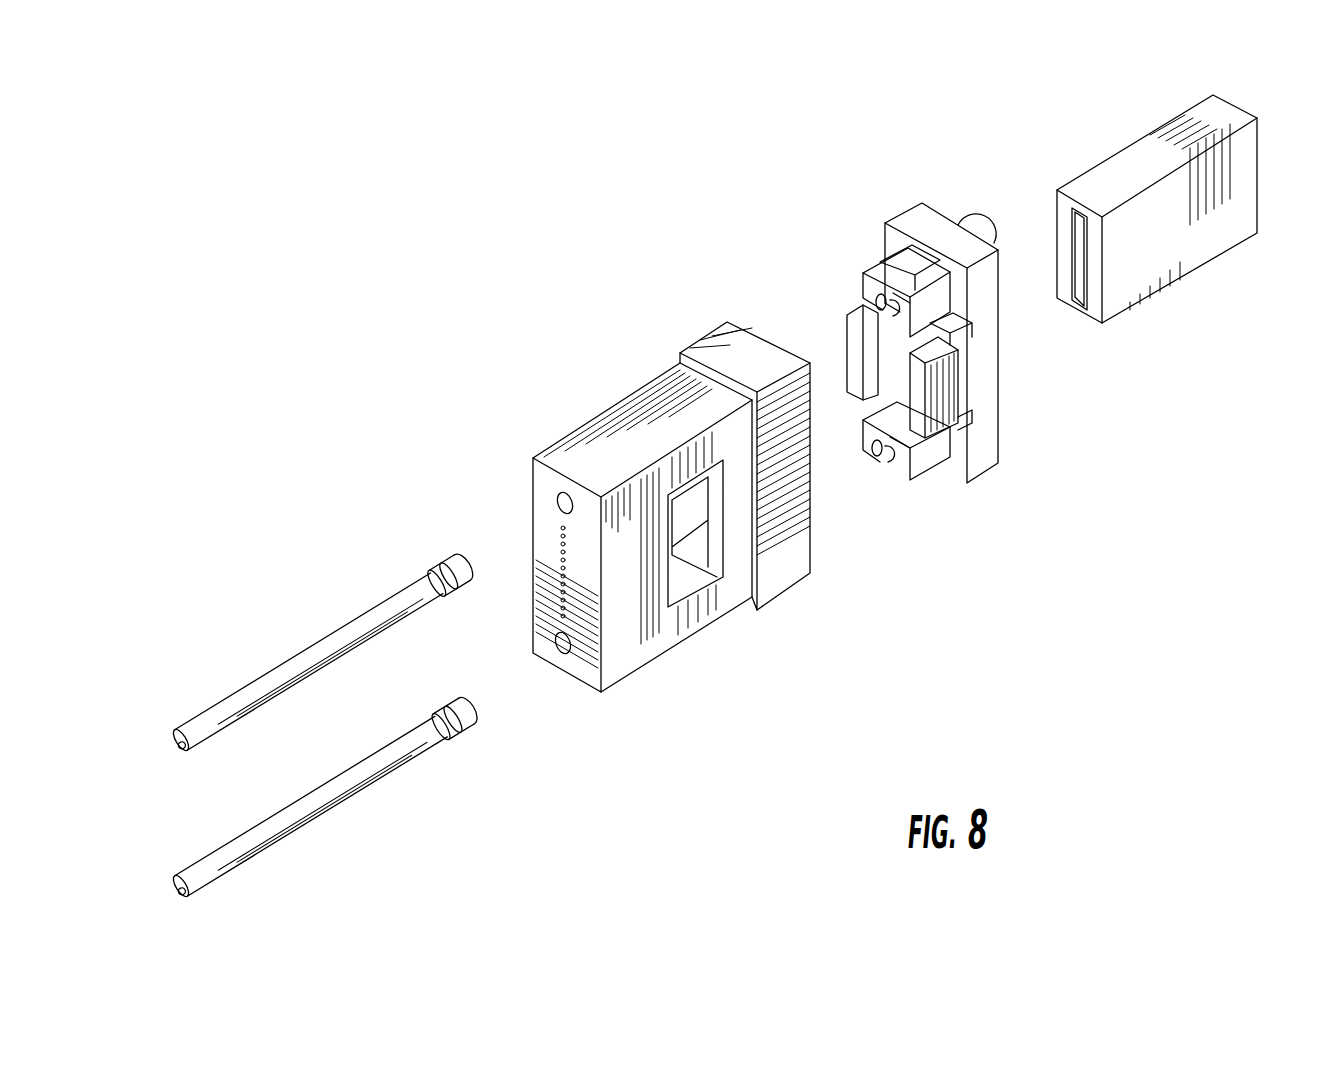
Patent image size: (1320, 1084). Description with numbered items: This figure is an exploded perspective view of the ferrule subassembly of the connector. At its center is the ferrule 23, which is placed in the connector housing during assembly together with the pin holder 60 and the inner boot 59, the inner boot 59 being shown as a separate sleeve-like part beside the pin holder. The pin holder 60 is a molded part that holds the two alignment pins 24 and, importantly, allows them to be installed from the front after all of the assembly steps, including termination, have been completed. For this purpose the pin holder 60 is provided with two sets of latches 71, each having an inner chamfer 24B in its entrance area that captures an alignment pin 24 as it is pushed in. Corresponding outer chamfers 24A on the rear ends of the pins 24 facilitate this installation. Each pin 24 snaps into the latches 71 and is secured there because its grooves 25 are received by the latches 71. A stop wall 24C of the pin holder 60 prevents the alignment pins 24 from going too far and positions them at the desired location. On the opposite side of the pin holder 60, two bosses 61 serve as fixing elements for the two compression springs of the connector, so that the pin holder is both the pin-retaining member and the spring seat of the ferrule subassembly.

The ferrule 23 is at (795, 568).
The alignment pins 24 is at (212, 712).
The outer chamfers 24A is at (465, 572).
The inner chamfer 24B is at (868, 300).
The stop wall 24C is at (918, 207).
The grooves 25 is at (433, 572).
The inner boot 59 is at (1163, 249).
The pin holder 60 is at (972, 375).
The bosses 61 is at (982, 222).
The latches 71 is at (938, 455).